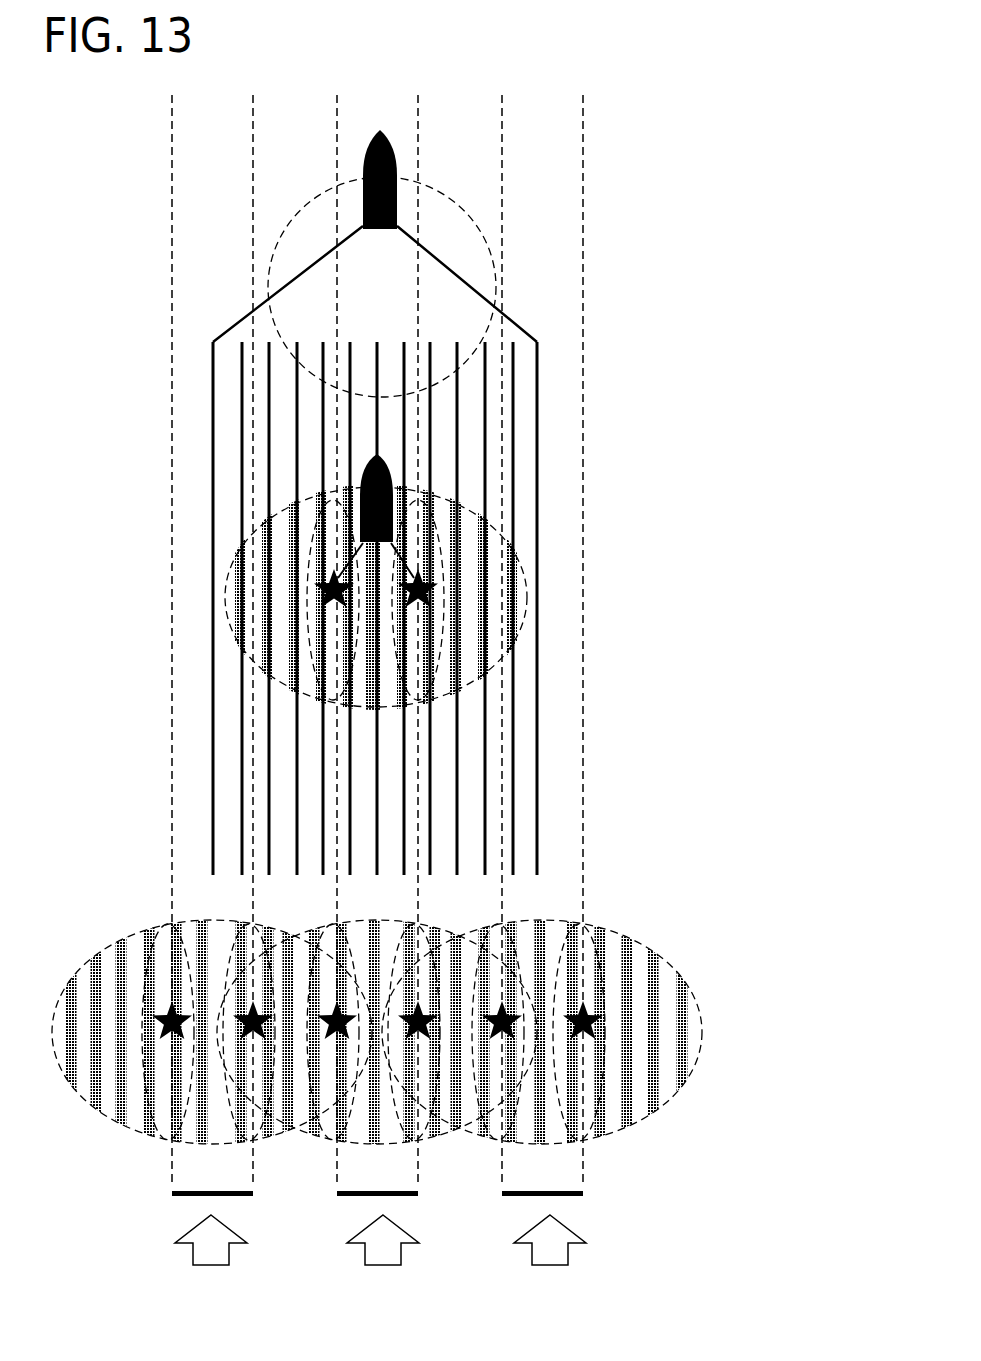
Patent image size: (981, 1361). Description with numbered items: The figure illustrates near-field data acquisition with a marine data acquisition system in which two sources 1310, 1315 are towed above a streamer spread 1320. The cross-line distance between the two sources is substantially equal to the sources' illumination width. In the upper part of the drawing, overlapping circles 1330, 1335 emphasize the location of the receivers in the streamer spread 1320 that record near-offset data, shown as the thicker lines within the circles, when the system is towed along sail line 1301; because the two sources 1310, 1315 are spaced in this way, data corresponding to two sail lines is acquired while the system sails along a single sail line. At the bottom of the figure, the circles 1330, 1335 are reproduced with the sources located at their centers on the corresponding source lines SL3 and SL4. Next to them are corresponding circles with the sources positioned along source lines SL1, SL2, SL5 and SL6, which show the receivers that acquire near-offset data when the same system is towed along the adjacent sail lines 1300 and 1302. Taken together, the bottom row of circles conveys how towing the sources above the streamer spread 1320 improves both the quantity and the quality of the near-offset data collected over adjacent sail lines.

The sail line 1300 is at (212, 1252).
The sail line 1301 is at (378, 1252).
The sail line 1302 is at (544, 1252).
The source 1310 is at (327, 593).
The source 1315 is at (423, 588).
The streamer spread 1320 is at (523, 433).
The overlapping circle 1330 is at (247, 527).
The overlapping circle 1335 is at (503, 533).
The source line SL1 is at (172, 1170).
The source line SL2 is at (253, 1165).
The source line SL3 is at (337, 1178).
The source line SL4 is at (418, 1164).
The source line SL5 is at (502, 1177).
The source line SL6 is at (583, 1168).